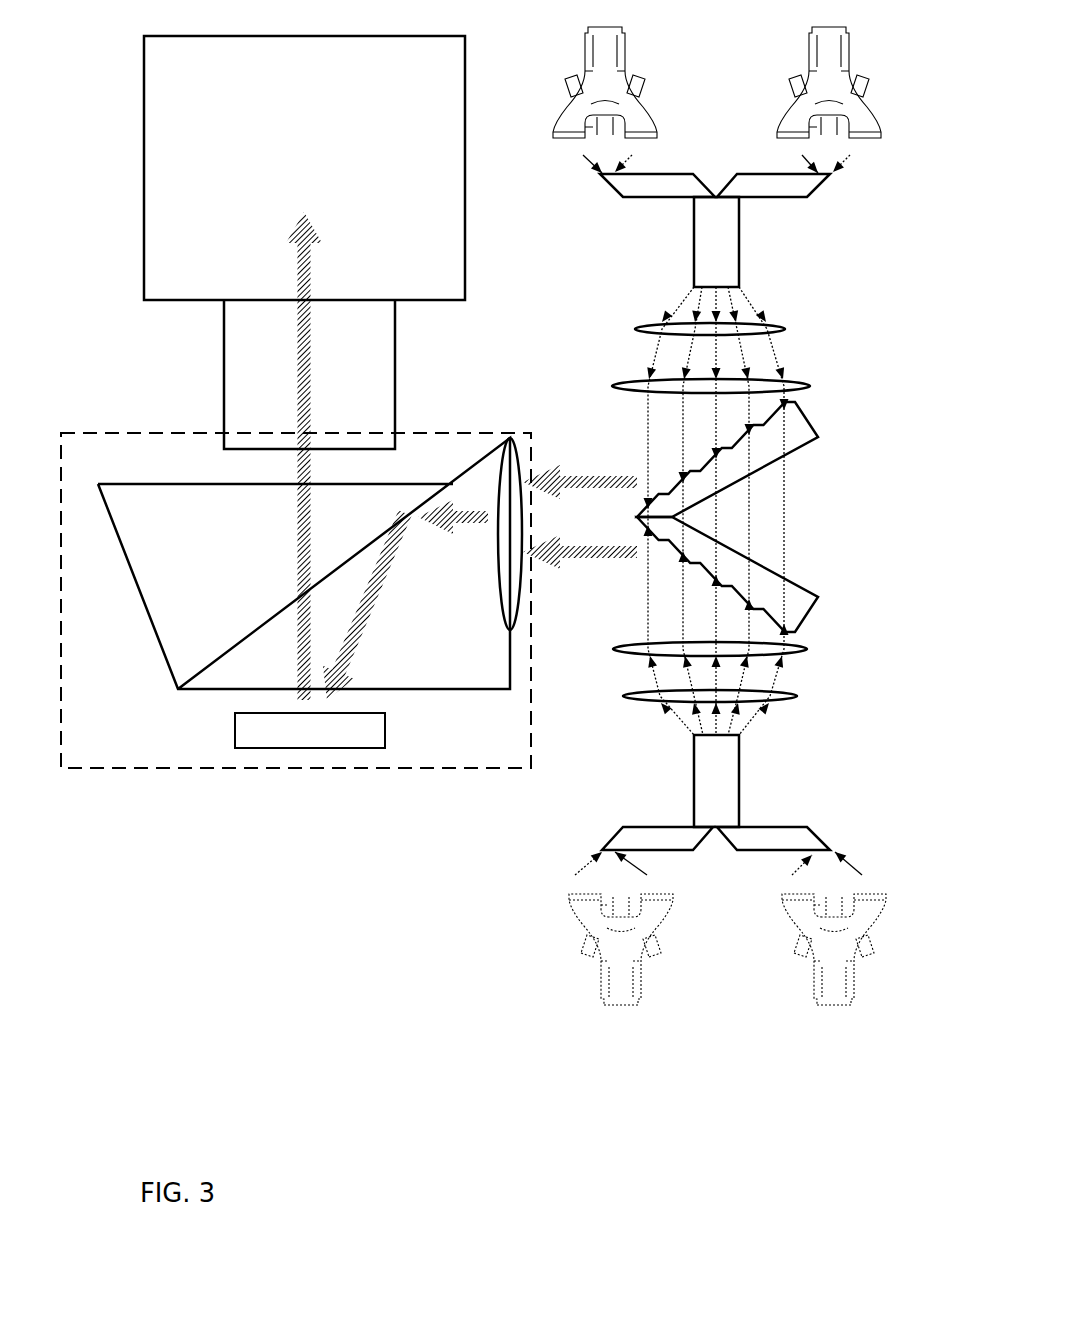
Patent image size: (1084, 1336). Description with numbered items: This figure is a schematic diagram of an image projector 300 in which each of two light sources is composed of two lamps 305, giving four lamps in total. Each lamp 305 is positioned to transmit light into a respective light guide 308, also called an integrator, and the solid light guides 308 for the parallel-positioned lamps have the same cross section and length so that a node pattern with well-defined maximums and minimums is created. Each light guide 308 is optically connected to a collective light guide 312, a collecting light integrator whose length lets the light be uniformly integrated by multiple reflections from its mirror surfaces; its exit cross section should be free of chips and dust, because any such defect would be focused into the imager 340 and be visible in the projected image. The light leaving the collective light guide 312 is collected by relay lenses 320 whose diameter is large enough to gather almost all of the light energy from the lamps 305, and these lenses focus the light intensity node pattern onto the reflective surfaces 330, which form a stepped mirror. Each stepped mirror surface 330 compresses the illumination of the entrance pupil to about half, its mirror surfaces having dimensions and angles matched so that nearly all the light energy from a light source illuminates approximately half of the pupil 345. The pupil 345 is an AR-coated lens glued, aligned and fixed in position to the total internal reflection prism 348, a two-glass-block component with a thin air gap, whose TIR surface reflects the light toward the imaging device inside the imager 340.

The image projector 300 is at (602, 1193).
The lamp 305 is at (650, 992).
The light guide 308 is at (790, 848).
The collective light guide 312 is at (708, 792).
The relay lenses 320 is at (805, 676).
The stepped mirror surface 330 is at (773, 570).
The imager 340 is at (296, 638).
The pupil 345 is at (518, 434).
The total internal reflection (TIR) prism 348 is at (304, 563).